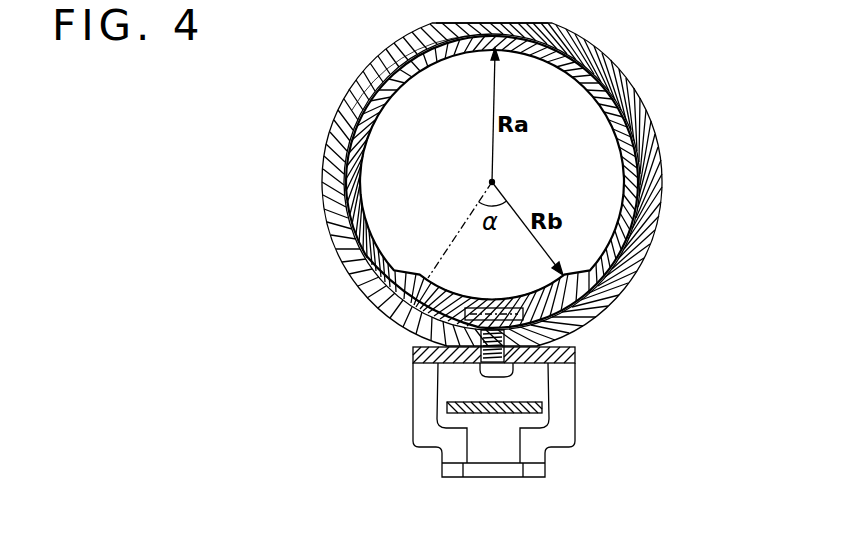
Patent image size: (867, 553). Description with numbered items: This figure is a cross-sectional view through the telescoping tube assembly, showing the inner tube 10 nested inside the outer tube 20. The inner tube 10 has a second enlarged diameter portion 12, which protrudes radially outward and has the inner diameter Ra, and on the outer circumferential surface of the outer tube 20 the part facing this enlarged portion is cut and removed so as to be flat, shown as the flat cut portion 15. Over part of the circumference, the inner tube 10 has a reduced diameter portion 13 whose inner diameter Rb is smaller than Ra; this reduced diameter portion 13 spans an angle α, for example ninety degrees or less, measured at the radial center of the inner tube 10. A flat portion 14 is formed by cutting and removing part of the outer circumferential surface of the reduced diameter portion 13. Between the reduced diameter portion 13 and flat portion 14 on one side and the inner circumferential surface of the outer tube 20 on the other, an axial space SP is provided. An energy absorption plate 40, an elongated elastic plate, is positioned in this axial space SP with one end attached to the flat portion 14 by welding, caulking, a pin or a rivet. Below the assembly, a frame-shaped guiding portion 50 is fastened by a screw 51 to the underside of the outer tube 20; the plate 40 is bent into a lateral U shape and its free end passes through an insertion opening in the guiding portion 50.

The inner tube 10 is at (636, 133).
The second enlarged diameter portion 12 is at (432, 46).
The reduced diameter portion 13 is at (590, 318).
The flat portion 14 is at (465, 320).
The flat cut portion of outer tube 15 is at (518, 24).
The outer tube 20 is at (619, 69).
The axial space SP is at (420, 305).
The energy absorption plate 40 is at (480, 341).
The guiding portion 50 is at (435, 436).
The screw 51 is at (478, 373).